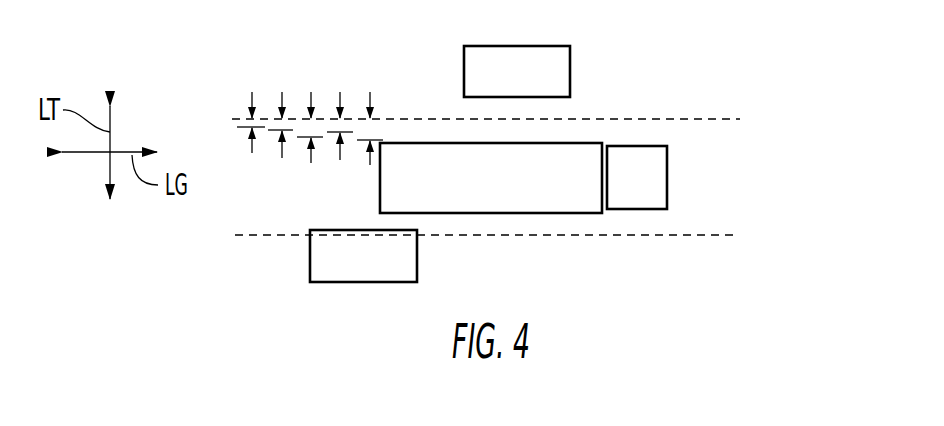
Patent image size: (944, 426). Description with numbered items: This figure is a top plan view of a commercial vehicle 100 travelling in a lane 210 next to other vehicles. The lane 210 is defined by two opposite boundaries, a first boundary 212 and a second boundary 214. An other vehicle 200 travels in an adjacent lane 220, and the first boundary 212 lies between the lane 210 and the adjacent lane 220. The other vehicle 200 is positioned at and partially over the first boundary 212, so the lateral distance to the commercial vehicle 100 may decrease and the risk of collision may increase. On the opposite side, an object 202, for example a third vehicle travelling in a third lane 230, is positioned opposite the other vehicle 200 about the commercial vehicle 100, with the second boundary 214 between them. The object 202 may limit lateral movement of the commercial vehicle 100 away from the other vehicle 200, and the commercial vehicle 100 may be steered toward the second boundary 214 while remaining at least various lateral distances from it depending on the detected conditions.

The commercial vehicle 100 is at (668, 192).
The other vehicle 200 is at (310, 262).
The object 202 is at (465, 60).
The lane 210 is at (258, 168).
The first boundary 212 is at (625, 237).
The second boundary 214 is at (655, 118).
The adjacent lane 220 is at (730, 259).
The third lane 230 is at (753, 80).